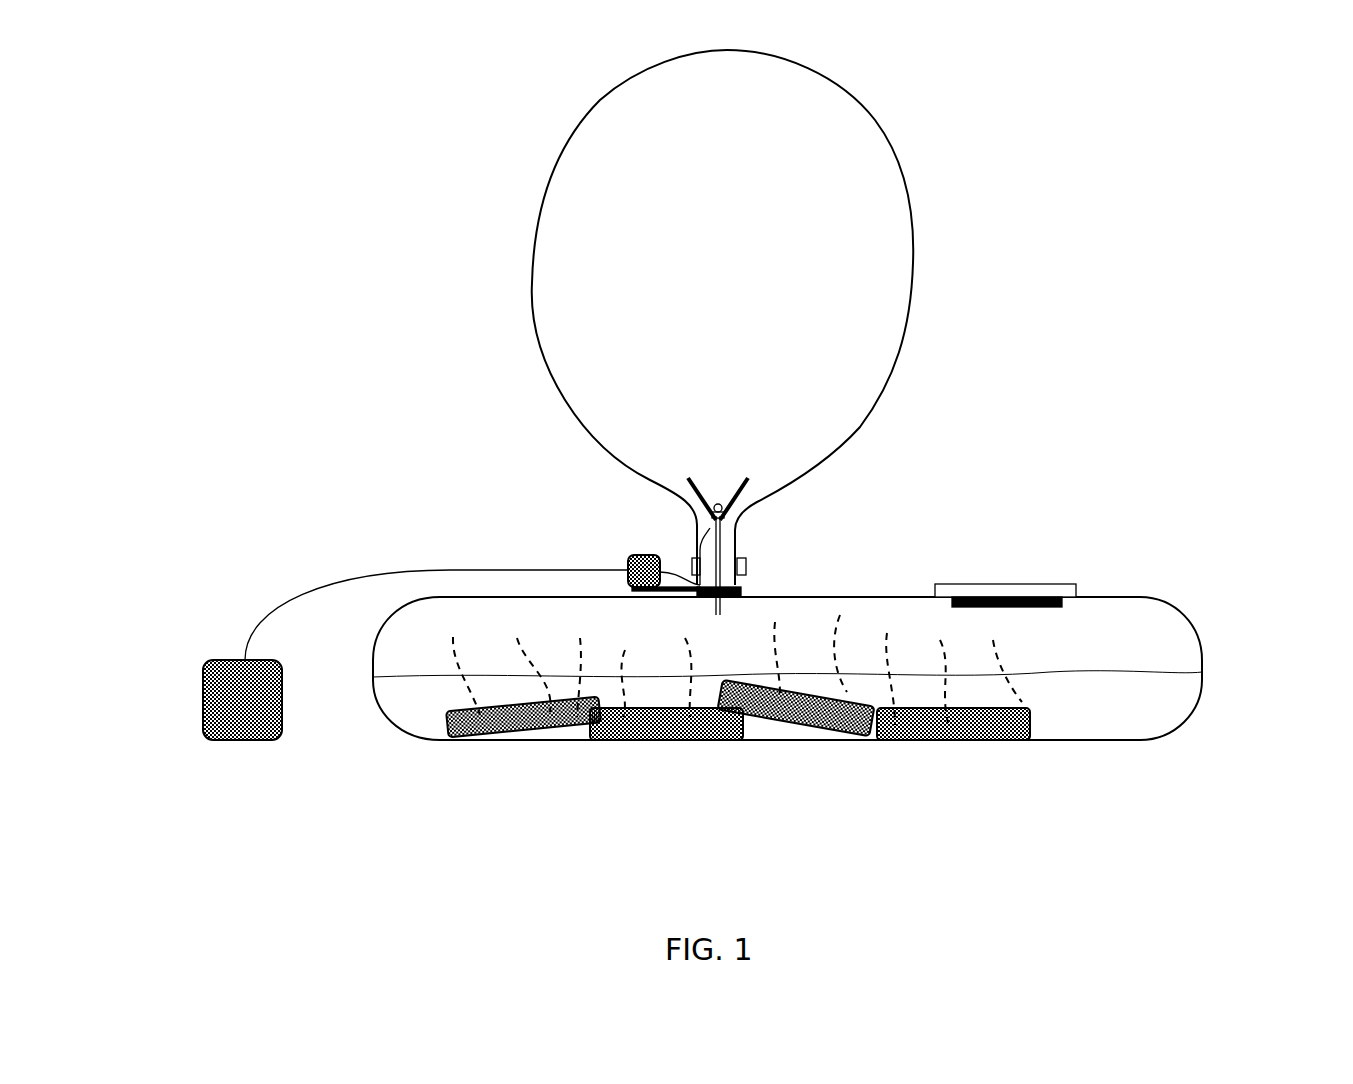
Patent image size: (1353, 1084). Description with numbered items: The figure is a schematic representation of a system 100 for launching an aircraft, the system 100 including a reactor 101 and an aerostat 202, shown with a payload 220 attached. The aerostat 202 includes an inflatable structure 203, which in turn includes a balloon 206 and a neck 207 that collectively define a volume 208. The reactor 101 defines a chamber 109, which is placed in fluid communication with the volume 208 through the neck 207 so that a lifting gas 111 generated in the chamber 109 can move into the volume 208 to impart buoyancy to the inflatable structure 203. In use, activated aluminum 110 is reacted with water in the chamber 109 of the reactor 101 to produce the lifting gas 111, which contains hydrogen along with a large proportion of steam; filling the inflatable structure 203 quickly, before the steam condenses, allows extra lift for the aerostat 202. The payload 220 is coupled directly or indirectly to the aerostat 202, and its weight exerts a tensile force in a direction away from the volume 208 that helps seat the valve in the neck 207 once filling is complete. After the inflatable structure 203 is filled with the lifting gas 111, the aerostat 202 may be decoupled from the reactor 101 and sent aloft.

The system 100 is at (395, 76).
The reactor 101 is at (1205, 577).
The chamber 109 is at (1118, 656).
The activated aluminum 110 is at (897, 740).
The lifting gas 111 is at (453, 640).
The aerostat 202 is at (1013, 62).
The inflatable structure 203 is at (926, 358).
The balloon 206 is at (892, 150).
The neck 207 is at (735, 545).
The volume 208 is at (746, 294).
The payload 220 is at (213, 660).